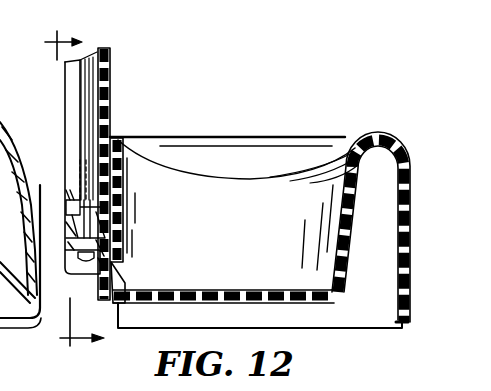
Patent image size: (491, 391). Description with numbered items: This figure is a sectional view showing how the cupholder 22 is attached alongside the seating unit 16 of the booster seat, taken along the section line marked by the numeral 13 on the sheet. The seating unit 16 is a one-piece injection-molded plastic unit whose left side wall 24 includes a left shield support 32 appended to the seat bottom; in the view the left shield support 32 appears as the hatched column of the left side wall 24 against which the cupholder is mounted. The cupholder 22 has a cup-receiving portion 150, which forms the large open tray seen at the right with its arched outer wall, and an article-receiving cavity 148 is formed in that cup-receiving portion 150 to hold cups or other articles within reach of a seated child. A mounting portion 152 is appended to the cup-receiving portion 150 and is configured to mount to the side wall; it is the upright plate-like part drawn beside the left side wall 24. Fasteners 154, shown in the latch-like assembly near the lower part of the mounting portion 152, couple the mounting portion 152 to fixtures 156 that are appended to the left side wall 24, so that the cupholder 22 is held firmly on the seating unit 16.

The section line 13- 13 is at (81, 192).
The seating unit 16 is at (150, 91).
The cupholder 22 is at (360, 124).
The left side wall 24 is at (122, 106).
The left shield support 32 is at (115, 56).
The article-receiving cavity 148 is at (268, 124).
The cup-receiving portion 150 is at (408, 322).
The mounting portion 152 is at (62, 180).
The fasteners 154 is at (86, 272).
The fixtures 156 is at (72, 97).